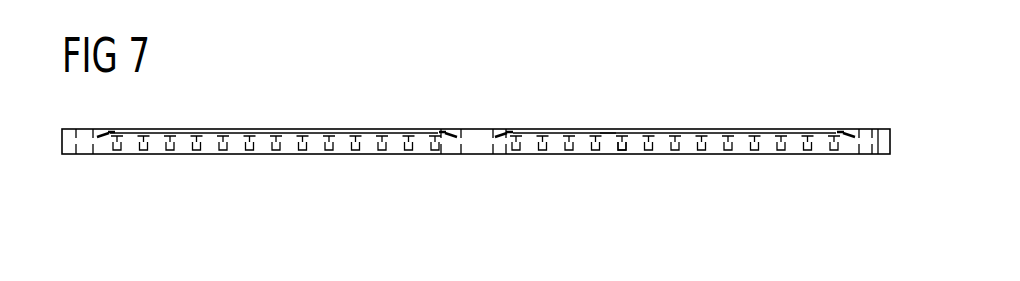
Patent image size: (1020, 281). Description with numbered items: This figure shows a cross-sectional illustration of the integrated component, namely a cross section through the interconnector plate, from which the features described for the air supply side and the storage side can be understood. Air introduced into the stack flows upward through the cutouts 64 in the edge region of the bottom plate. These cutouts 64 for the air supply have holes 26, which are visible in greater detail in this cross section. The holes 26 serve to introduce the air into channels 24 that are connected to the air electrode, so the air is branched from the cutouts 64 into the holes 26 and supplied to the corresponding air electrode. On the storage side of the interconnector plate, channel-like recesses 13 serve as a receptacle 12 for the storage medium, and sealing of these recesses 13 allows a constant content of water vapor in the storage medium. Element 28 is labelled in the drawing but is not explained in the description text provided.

The receptacle 12 is at (620, 153).
The channel-like recesses 13 is at (635, 190).
The channels 24 is at (608, 128).
The holes 26 is at (852, 137).
The end region of strip 28 is at (863, 155).
The cutouts 64 is at (863, 128).